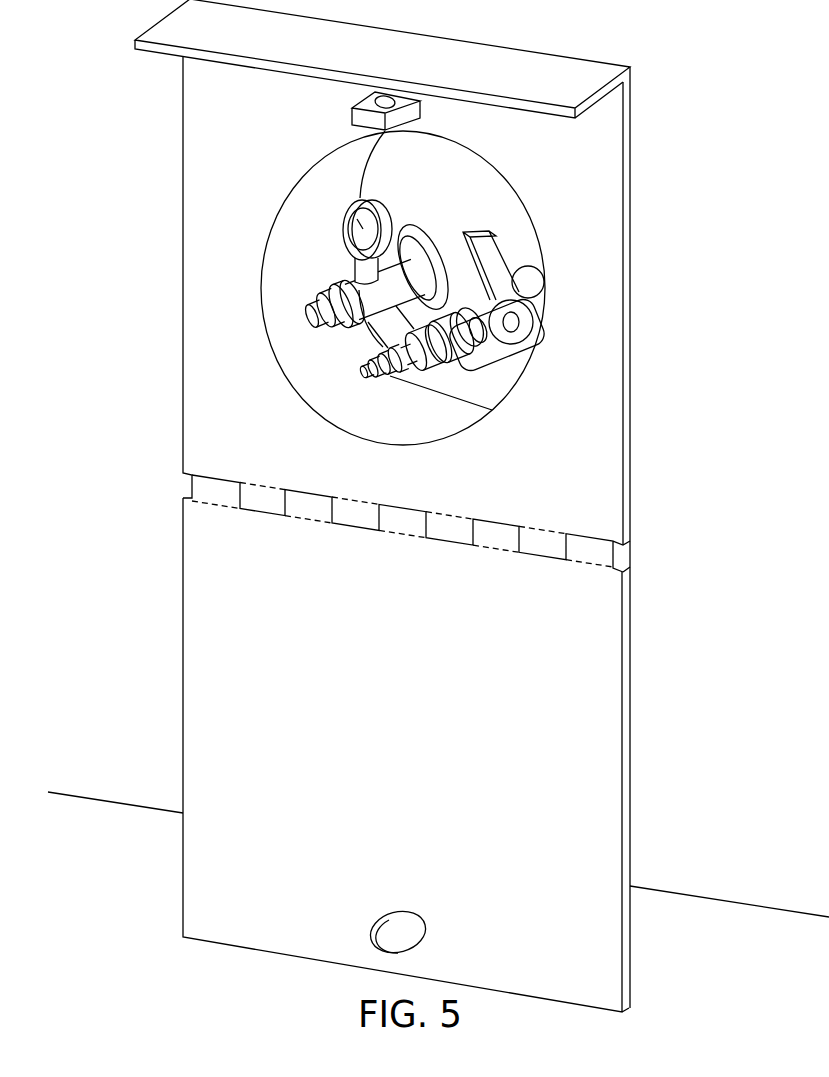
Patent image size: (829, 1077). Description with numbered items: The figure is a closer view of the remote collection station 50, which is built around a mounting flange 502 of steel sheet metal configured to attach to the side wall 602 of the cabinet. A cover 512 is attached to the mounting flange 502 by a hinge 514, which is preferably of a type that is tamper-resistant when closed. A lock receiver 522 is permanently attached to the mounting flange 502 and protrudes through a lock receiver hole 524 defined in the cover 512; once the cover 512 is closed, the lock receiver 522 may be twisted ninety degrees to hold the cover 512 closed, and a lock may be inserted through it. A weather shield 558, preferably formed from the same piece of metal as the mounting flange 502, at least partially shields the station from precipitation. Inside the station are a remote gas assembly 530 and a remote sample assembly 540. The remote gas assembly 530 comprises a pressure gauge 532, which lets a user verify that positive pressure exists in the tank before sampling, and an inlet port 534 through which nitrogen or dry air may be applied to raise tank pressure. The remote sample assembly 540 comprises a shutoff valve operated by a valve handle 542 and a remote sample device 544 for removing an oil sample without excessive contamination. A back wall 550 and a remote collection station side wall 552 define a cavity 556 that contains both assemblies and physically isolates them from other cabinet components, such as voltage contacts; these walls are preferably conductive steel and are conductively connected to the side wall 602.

The remote collection station 50 is at (152, 77).
The mounting flange 502 is at (267, 128).
The cover 512 is at (411, 738).
The hinge 514 is at (183, 483).
The lock receiver 522 is at (403, 98).
The lock receiver hole 524 is at (373, 927).
The remote gas assembly 530 is at (335, 265).
The pressure gauge 532 is at (343, 228).
The inlet port 534 is at (318, 315).
The remote sample assembly 540 is at (485, 362).
The valve handle 542 is at (493, 250).
The remote sample device 544 is at (383, 373).
The back wall 550 is at (473, 206).
The remote collection station side wall 552 is at (344, 372).
The cavity 556 is at (275, 372).
The weather shield 558 is at (530, 90).
The side wall 602 is at (716, 70).